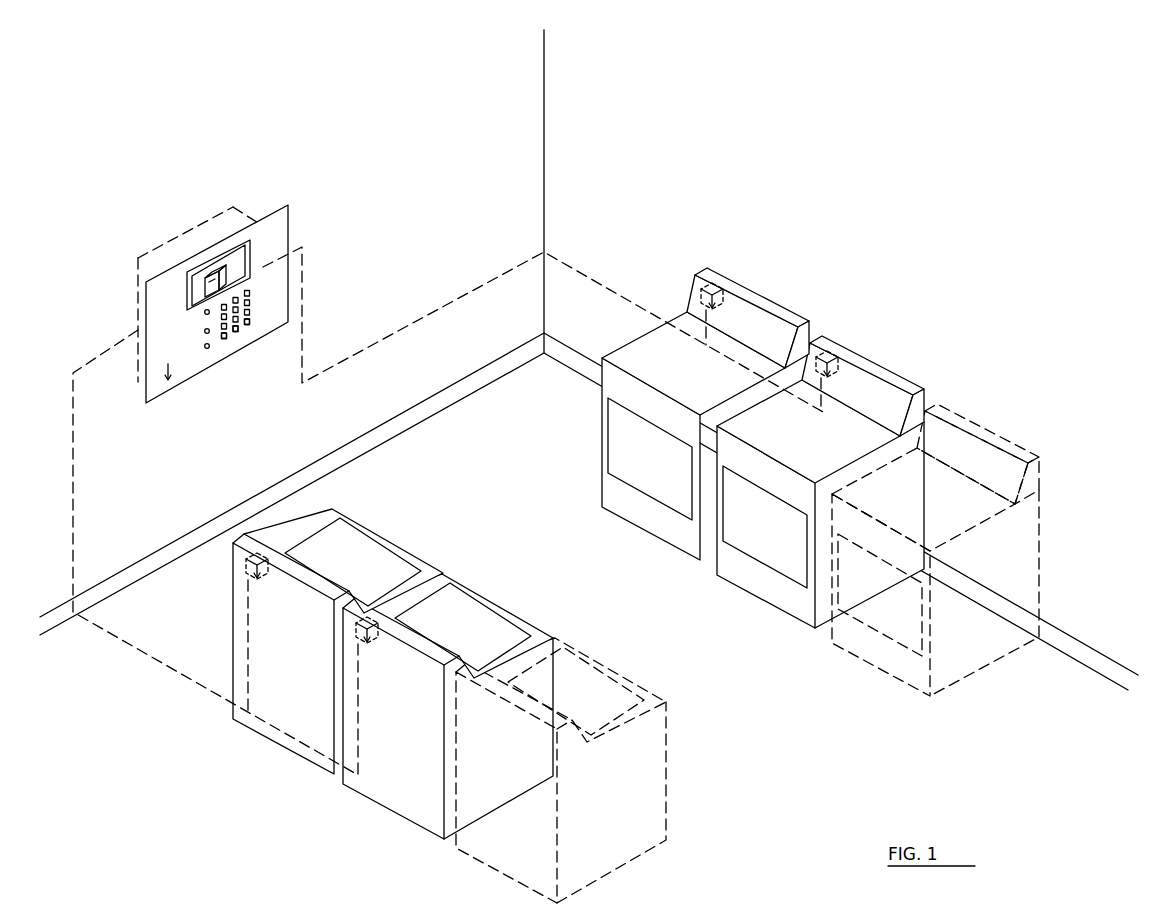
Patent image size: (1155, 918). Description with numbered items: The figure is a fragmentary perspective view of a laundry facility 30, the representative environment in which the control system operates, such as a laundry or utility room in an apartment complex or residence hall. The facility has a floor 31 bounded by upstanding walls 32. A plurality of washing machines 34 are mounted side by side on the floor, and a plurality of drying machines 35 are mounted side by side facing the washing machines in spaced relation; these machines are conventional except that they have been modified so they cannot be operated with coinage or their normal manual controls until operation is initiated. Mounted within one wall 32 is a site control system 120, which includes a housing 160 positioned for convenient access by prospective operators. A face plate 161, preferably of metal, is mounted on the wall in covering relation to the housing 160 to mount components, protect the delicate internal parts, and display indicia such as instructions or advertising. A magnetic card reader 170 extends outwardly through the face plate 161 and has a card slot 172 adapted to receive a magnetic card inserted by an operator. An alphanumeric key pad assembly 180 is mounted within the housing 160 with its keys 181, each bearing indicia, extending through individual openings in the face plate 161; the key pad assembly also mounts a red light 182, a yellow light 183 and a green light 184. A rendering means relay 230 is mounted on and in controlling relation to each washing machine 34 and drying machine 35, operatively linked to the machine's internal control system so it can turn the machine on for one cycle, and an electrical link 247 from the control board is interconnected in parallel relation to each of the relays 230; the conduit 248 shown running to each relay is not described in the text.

The laundry facility 30 is at (571, 243).
The floor 31 is at (532, 528).
The walls 32 is at (397, 381).
The washing machines 34 is at (372, 528).
The drying machines 35 is at (757, 298).
The site control system 120 is at (213, 190).
The housing 160 is at (238, 205).
The face plate 161 is at (277, 307).
The magnetic card reader 170 is at (250, 250).
The card slot 172 is at (217, 281).
The alphanumeric key pad assembly 180 is at (252, 318).
The keys 181 is at (247, 327).
The red light 182 is at (205, 313).
The yellow light 183 is at (205, 332).
The green light 184 is at (206, 348).
The rendering means relay 230 is at (244, 566).
The electrical link 247 is at (590, 272).
The cable 248 is at (246, 625).